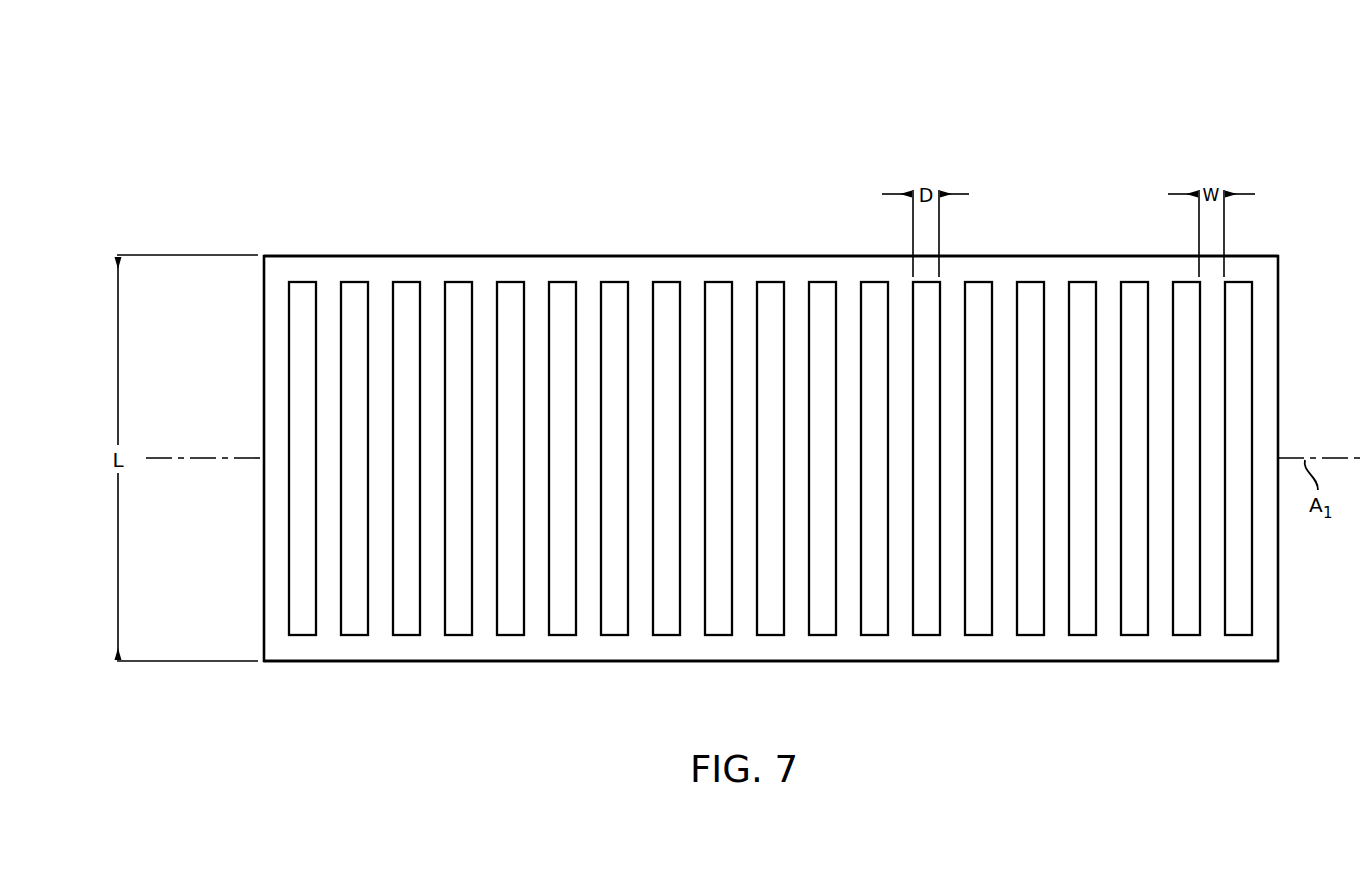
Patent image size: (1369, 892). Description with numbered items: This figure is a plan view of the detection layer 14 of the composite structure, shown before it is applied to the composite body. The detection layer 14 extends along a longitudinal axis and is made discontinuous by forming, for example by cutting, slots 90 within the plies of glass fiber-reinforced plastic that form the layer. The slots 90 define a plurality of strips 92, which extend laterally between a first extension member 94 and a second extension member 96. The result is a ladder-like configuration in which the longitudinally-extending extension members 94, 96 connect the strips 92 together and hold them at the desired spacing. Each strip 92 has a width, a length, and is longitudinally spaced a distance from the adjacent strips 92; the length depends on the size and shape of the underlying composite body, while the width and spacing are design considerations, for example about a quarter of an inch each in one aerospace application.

The detection layer 14 is at (1235, 152).
The slots 90 is at (409, 618).
The strips 92 is at (381, 318).
The first extension member 94 is at (634, 268).
The second extension member 96 is at (632, 643).